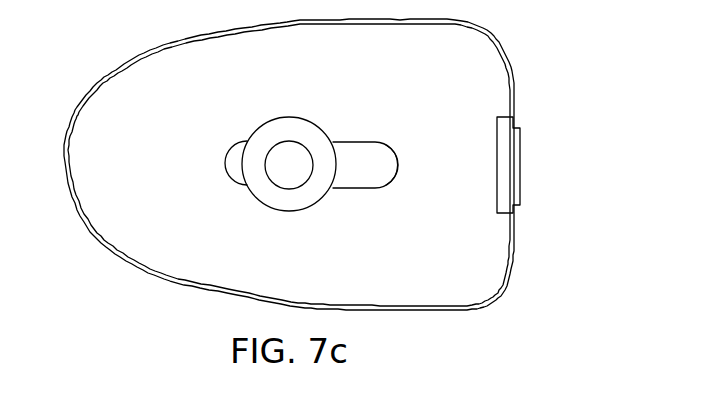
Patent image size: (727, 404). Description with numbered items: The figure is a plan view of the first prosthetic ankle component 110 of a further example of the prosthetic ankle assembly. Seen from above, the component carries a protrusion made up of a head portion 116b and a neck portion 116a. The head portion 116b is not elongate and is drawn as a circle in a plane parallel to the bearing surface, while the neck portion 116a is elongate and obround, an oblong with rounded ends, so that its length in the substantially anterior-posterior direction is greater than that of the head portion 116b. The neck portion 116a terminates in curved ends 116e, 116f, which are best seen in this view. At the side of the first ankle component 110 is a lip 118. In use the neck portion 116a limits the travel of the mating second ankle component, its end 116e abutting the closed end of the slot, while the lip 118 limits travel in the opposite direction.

The first prosthetic ankle component 110 is at (477, 62).
The lip 118 is at (510, 167).
The head portion 116b is at (270, 192).
The curved end 116f is at (222, 158).
The neck portion 116a is at (356, 172).
The curved end 116e is at (403, 162).